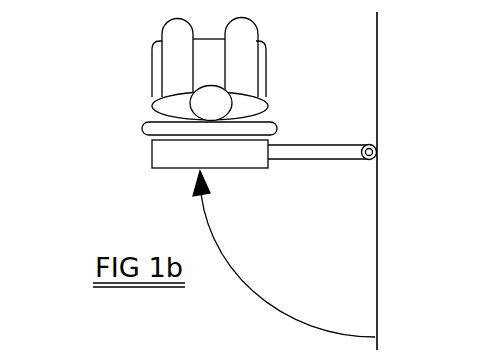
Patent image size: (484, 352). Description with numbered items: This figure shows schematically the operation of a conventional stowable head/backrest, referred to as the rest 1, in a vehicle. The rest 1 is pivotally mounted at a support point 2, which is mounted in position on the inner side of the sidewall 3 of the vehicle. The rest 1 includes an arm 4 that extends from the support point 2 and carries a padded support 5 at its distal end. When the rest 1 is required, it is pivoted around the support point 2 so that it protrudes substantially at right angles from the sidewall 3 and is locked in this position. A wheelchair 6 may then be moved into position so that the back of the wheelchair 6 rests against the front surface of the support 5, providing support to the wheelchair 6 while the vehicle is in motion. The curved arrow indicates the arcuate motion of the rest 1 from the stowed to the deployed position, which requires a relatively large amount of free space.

The rest 1 is at (215, 178).
The support point 2 is at (362, 146).
The sidewall 3 is at (377, 79).
The arm 4 is at (313, 153).
The padded support 5 is at (155, 153).
The wheelchair 6 is at (153, 75).